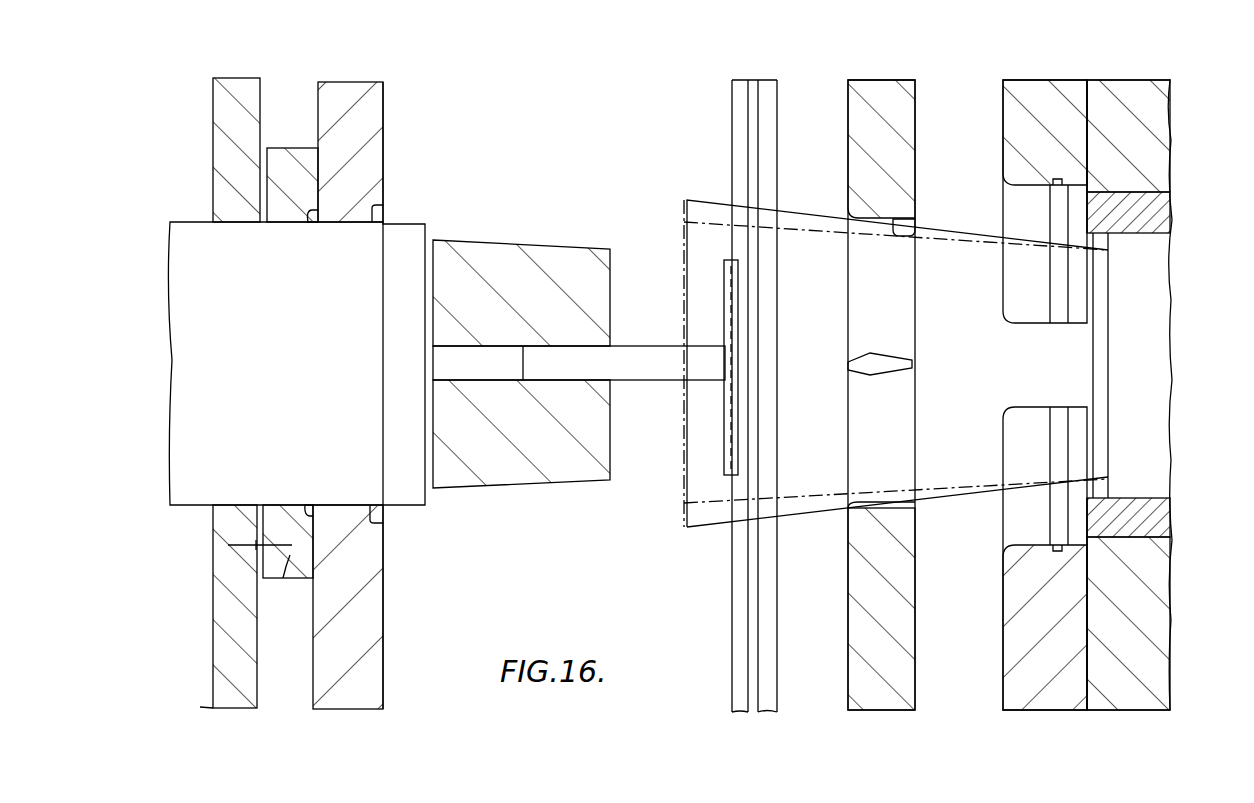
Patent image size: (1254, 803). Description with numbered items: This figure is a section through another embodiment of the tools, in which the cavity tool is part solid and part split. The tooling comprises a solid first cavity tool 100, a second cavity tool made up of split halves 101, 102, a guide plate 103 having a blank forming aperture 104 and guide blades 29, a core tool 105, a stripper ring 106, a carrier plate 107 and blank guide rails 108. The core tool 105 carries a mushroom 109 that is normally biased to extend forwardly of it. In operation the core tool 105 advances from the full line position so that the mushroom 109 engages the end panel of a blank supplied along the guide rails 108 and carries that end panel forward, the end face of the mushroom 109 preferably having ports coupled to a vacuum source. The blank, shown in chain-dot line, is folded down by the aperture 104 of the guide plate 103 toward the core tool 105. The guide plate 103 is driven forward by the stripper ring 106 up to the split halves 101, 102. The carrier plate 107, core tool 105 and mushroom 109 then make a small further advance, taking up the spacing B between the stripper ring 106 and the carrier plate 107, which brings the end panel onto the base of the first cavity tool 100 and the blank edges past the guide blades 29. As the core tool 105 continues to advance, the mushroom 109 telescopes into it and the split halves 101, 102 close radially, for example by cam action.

The guide blades 29 is at (882, 368).
The first cavity tool 100 is at (1147, 150).
The split half 101 is at (1018, 155).
The split half 102 is at (1015, 660).
The guide plate 103 is at (858, 185).
The blank forming aperture 104 is at (913, 234).
The core tool 105 is at (582, 288).
The stripper ring 106 is at (303, 565).
The carrier plate 107 is at (245, 635).
The blank guide rails 108 is at (731, 632).
The mushroom 109 is at (724, 433).